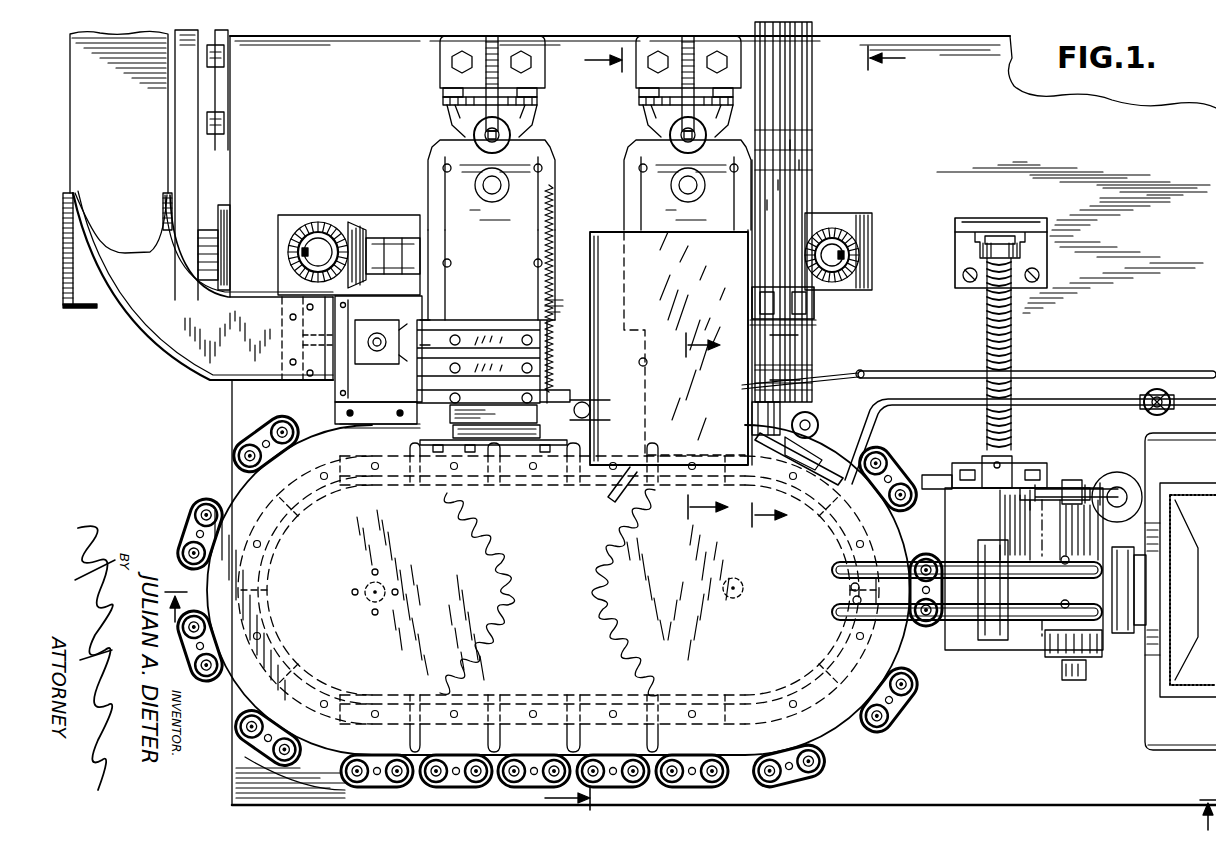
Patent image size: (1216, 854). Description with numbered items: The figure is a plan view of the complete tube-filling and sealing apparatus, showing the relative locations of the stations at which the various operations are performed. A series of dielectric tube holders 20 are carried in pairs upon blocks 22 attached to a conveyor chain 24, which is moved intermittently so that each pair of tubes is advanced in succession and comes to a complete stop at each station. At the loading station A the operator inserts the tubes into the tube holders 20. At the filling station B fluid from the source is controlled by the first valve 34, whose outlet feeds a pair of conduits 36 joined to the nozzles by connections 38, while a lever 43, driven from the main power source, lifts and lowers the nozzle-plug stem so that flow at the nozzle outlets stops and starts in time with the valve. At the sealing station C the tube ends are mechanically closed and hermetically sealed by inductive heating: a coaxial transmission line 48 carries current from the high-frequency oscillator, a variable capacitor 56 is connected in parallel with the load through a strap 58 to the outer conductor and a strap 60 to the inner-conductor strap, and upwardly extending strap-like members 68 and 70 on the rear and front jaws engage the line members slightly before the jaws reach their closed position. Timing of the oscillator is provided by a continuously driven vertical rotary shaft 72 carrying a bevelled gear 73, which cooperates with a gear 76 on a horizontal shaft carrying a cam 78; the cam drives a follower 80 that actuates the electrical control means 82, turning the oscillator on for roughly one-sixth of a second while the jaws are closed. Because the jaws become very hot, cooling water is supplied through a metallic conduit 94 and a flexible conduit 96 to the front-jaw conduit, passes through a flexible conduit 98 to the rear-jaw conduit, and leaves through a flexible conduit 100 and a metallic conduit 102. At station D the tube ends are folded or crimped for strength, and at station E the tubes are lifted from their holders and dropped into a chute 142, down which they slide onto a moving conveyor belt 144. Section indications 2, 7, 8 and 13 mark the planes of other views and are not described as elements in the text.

The section line 2- 2 is at (690, 699).
The section line 7- 7 is at (593, 429).
The section line 8- 8 is at (819, 287).
The section line 13- 13 is at (694, 427).
The tube holders 20 is at (202, 522).
The blocks 22 is at (224, 510).
The conveyor chain 24 is at (574, 712).
The first valve 34 is at (1090, 660).
The conduits 36 is at (968, 545).
The connections 38 is at (834, 568).
The lever 43 is at (1090, 485).
The coaxial transmission line 48 is at (812, 127).
The variable capacitor 56 is at (615, 240).
The strap 58 is at (814, 313).
The strap 60 is at (752, 418).
The strap-like member 68 is at (755, 387).
The strap-like member 70 is at (799, 459).
The rotary shaft 72 is at (845, 258).
The bevelled gear 73 is at (870, 236).
The gear 76 is at (812, 207).
The cam 78 is at (812, 187).
The follower 80 is at (812, 166).
The electrical control means 82 is at (812, 146).
The metallic conduit 94 is at (1088, 410).
The flexible conduit 96 is at (854, 448).
The flexible conduit 98 is at (605, 500).
The flexible conduit 100 is at (830, 375).
The metallic conduit 102 is at (1070, 371).
The chute 142 is at (185, 362).
The conveyor belt 144 is at (138, 160).
The loading station A is at (366, 801).
The filling station B is at (924, 568).
The sealing station C is at (688, 250).
The folding station D is at (513, 244).
The unloading station E is at (382, 375).